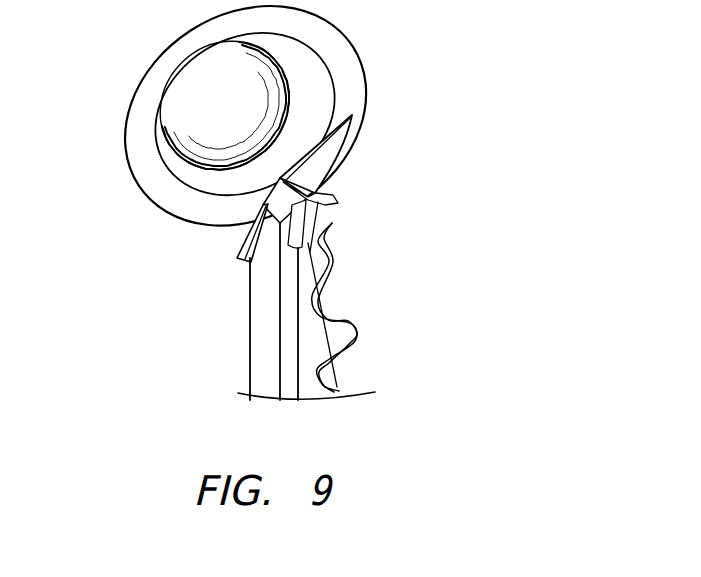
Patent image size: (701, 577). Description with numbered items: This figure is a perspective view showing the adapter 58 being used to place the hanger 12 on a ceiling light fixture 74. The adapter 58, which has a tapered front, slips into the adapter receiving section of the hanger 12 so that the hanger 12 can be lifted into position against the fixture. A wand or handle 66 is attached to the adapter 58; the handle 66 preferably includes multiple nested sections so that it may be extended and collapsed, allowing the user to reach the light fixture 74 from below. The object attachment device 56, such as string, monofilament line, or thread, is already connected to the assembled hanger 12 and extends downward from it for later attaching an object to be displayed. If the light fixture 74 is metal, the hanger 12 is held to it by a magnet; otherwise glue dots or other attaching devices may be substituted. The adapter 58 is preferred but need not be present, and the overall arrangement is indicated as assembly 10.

The instrument assembly 10 is at (508, 45).
The light fixture 74 is at (122, 143).
The adapter 58 is at (340, 163).
The hanger 12 is at (333, 195).
The handle 66 is at (250, 335).
The object attachment device 56 is at (343, 320).